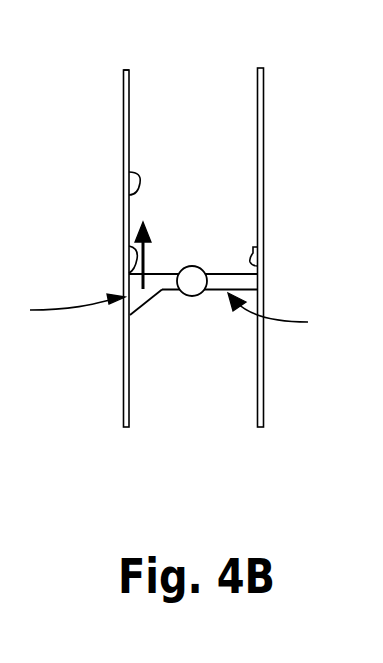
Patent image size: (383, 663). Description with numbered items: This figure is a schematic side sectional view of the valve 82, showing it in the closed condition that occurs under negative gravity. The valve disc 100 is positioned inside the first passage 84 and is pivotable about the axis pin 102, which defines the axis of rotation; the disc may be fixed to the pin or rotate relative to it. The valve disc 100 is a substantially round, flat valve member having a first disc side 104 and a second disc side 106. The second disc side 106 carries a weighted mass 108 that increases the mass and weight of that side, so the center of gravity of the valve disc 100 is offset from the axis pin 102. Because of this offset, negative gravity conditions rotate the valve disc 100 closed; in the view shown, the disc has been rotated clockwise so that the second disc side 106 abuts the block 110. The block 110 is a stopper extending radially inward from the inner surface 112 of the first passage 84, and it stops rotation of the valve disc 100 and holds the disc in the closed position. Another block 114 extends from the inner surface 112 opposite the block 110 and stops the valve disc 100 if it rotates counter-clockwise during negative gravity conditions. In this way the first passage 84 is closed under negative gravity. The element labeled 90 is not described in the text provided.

The valve 82 is at (63, 309).
The first passage 84 is at (123, 127).
The wall segment 90 is at (127, 68).
The valve disc 100 is at (287, 315).
The axis pin 102 is at (195, 295).
The first disc side 104 is at (223, 273).
The second disc side 106 is at (160, 273).
The weighted mass 108 is at (131, 316).
The block 110 is at (129, 246).
The inner surface 112 is at (129, 172).
The block 114 is at (258, 264).